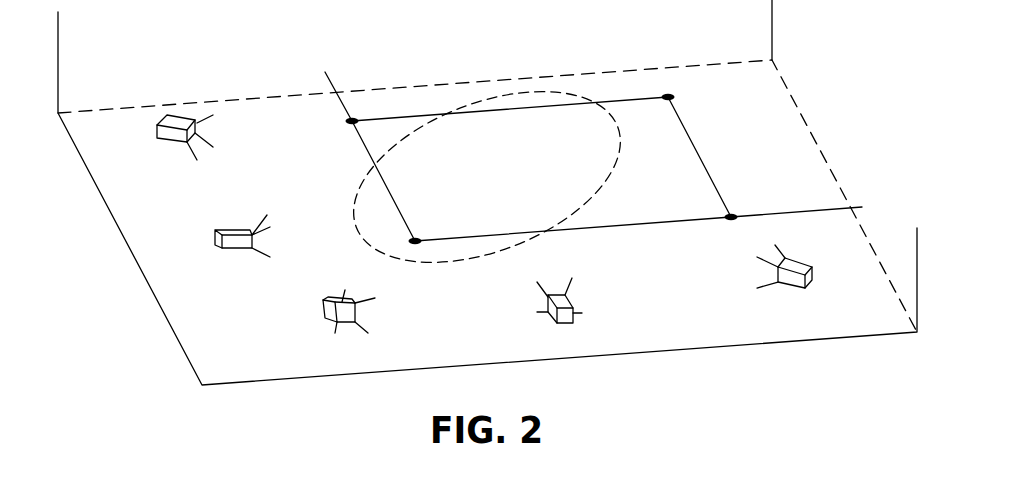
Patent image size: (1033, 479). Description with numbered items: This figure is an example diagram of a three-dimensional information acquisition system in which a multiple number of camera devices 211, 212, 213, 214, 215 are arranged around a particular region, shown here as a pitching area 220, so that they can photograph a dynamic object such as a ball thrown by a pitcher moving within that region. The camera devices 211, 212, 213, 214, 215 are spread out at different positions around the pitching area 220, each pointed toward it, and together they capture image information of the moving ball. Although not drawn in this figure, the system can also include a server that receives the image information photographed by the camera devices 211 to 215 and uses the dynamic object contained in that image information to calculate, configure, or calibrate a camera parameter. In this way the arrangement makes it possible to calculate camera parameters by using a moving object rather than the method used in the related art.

The camera device 211 is at (160, 138).
The camera device 212 is at (227, 248).
The camera device 213 is at (323, 310).
The camera device 214 is at (573, 320).
The camera device 215 is at (790, 288).
The pitching area 220 is at (597, 190).